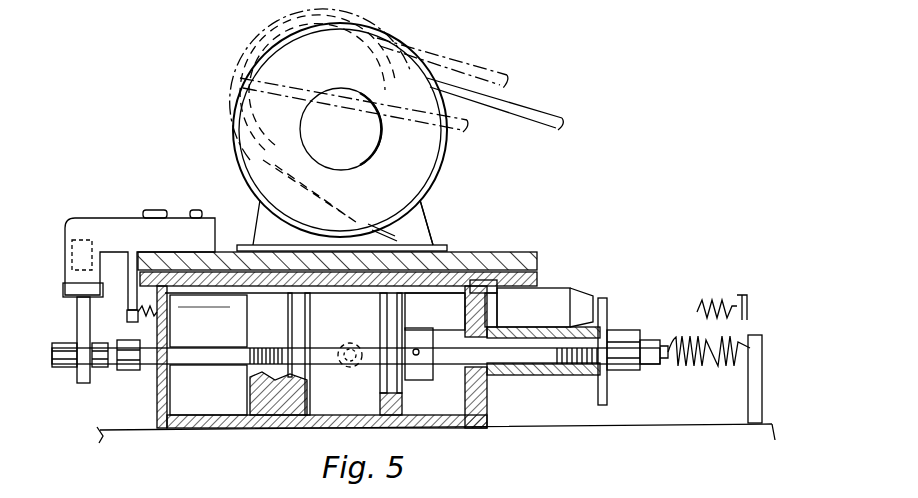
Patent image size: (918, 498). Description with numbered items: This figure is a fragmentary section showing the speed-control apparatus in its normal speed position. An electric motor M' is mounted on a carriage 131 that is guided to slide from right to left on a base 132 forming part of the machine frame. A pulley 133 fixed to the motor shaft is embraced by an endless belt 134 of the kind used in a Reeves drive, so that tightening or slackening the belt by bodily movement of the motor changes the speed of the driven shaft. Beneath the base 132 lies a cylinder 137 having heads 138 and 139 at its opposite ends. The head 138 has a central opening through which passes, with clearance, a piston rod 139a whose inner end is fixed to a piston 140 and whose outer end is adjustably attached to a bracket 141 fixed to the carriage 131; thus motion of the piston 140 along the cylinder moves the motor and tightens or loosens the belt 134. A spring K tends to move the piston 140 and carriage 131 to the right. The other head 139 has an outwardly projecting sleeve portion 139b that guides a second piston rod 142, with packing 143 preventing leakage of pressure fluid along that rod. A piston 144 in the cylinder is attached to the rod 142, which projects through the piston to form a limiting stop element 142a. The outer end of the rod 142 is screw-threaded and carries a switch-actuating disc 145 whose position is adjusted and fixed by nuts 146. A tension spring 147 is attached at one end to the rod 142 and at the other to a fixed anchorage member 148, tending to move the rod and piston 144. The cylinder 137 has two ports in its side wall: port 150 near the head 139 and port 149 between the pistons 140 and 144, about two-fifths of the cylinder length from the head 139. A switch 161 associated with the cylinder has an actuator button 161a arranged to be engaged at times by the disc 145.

The carriage 131 is at (487, 253).
The base 132 is at (545, 268).
The pulley 133 is at (432, 160).
The endless belt 134 is at (543, 110).
The cylinder 137 is at (227, 432).
The cylinder head 138 is at (157, 400).
The cylinder head 139 is at (478, 430).
The piston rod 139a is at (222, 367).
The sleeve portion 139b is at (552, 377).
The piston 140 is at (262, 332).
The bracket 141 is at (75, 258).
The second piston rod 142 is at (542, 313).
The limiting stop element 142a is at (373, 340).
The packing 143 is at (488, 375).
The piston 144 is at (404, 321).
The switch-actuating disc 145 is at (605, 323).
The nuts 146 is at (612, 365).
The tension spring 147 is at (709, 364).
The anchorage member 148 is at (752, 398).
The port 149 is at (309, 354).
The port 150 is at (447, 373).
The switch 161 is at (573, 292).
The actuator button 161a is at (593, 296).
The spring K is at (140, 325).
The electric motor M' is at (451, 216).